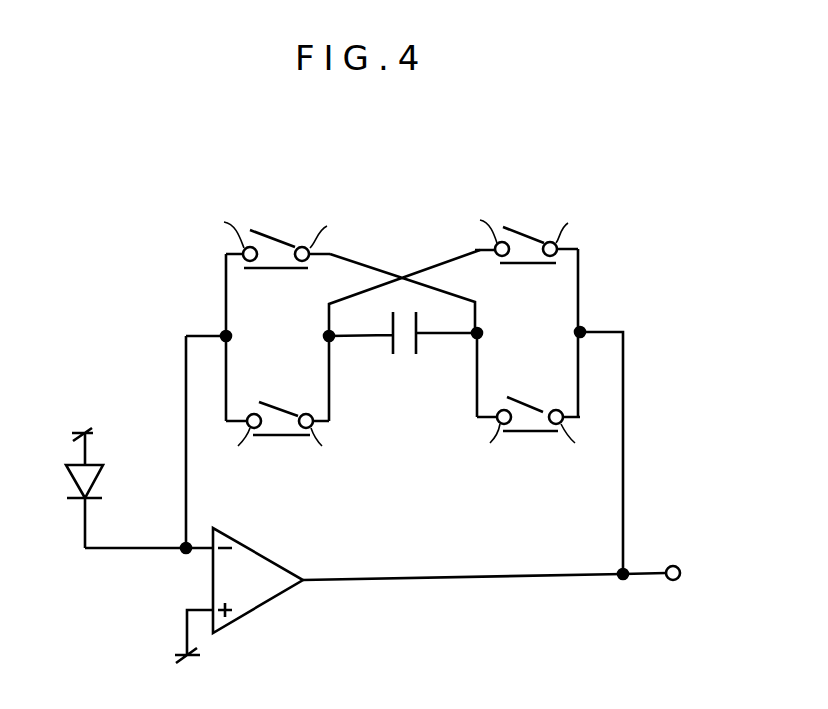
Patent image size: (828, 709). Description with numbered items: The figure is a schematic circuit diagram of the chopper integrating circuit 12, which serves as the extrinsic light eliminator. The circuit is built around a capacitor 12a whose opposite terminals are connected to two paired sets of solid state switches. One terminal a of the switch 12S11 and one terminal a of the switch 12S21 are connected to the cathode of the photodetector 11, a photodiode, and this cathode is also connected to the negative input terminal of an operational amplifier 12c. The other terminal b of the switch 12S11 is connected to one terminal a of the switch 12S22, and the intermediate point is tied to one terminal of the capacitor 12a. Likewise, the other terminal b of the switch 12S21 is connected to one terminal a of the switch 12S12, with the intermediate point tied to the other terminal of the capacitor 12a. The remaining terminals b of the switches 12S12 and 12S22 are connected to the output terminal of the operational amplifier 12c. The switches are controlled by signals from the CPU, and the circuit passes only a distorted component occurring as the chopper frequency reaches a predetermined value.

The chopper integrating circuit 12 is at (436, 228).
The switch 12S21 is at (264, 230).
The switch 12S22 is at (530, 230).
The switch 12S11 is at (262, 404).
The switch 12S12 is at (518, 400).
The capacitor 12a is at (412, 356).
The operational amplifier 12c is at (270, 603).
The photodetector 11 is at (98, 478).